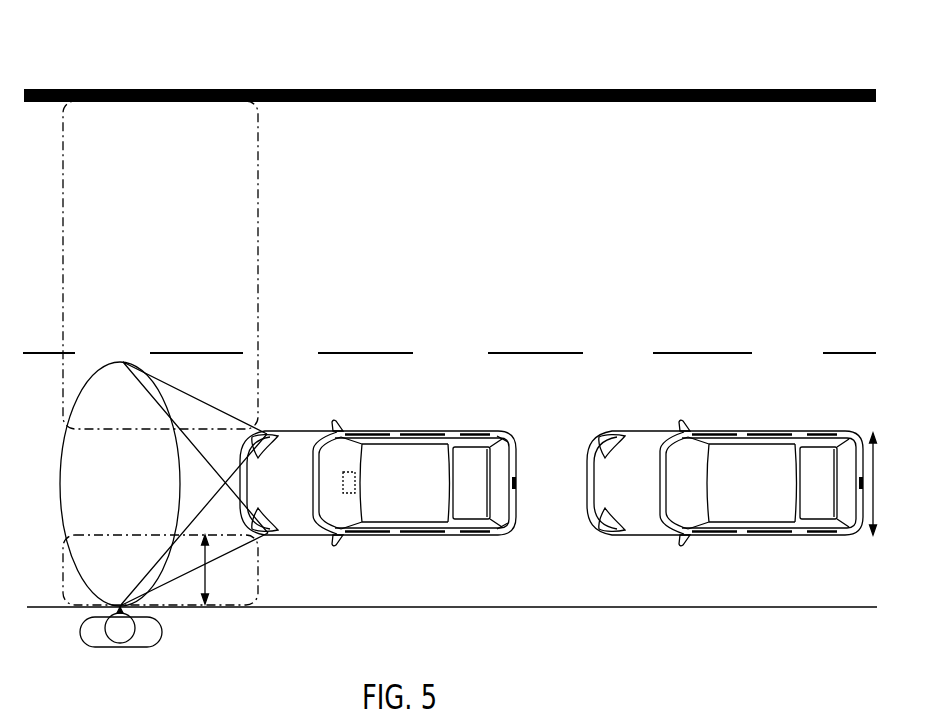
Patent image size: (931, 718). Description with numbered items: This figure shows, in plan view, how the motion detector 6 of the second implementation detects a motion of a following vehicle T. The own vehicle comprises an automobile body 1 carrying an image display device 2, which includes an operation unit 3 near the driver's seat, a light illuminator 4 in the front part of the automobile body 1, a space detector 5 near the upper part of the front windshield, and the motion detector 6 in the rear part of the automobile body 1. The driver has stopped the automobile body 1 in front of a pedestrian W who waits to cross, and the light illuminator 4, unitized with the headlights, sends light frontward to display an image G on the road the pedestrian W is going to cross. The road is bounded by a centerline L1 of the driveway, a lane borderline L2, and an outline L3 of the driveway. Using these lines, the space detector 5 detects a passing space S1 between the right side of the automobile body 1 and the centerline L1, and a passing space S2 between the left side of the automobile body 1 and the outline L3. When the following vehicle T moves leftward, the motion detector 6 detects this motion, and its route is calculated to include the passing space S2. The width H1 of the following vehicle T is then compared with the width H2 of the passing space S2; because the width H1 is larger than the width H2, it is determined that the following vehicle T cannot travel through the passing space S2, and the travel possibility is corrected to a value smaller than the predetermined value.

The automobile body 1 is at (378, 488).
The image display device 2 is at (300, 384).
The operation unit 3 is at (329, 456).
The light illuminator 4 is at (267, 433).
The space detector 5 is at (347, 471).
The motion detector 6 is at (503, 433).
The centerline of driveway L1 is at (46, 88).
The lane borderline L2 is at (43, 355).
The outline of driveway L3 is at (45, 608).
The passing space S1 is at (259, 221).
The passing space S2 is at (259, 572).
The image G is at (60, 472).
The pedestrian W is at (162, 633).
The following vehicle T is at (772, 528).
The width of following vehicle H1 is at (887, 484).
The width of passing space H2 is at (220, 569).